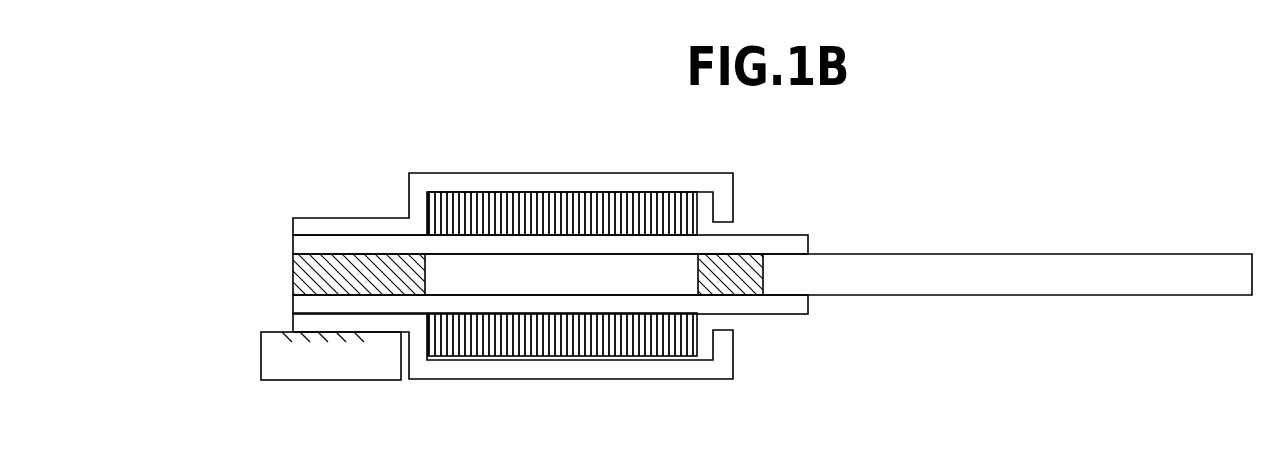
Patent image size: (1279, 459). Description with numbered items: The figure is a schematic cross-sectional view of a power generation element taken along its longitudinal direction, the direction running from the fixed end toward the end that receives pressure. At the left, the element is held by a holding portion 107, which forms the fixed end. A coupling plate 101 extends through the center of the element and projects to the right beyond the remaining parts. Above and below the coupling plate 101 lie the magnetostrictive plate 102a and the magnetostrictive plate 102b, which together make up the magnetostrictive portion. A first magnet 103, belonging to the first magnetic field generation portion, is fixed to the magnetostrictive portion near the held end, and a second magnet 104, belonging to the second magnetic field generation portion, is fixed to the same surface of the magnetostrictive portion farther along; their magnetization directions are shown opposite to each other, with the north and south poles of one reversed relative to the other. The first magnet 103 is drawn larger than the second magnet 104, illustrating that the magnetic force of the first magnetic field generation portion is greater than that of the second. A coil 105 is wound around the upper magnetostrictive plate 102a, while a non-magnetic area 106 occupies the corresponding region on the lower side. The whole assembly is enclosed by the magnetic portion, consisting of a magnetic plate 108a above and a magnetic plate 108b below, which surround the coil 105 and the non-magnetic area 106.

The coupling plate 101 is at (1086, 262).
The magnetostrictive plate 102a is at (795, 235).
The magnetostrictive plate 102b is at (783, 316).
The first magnet 103 is at (330, 262).
The second magnet 104 is at (752, 261).
The coil 105 is at (553, 197).
The non-magnetic area 106 is at (533, 283).
The holding portion 107 is at (335, 370).
The magnetic plate 108a is at (683, 183).
The magnetic plate 108b is at (655, 372).